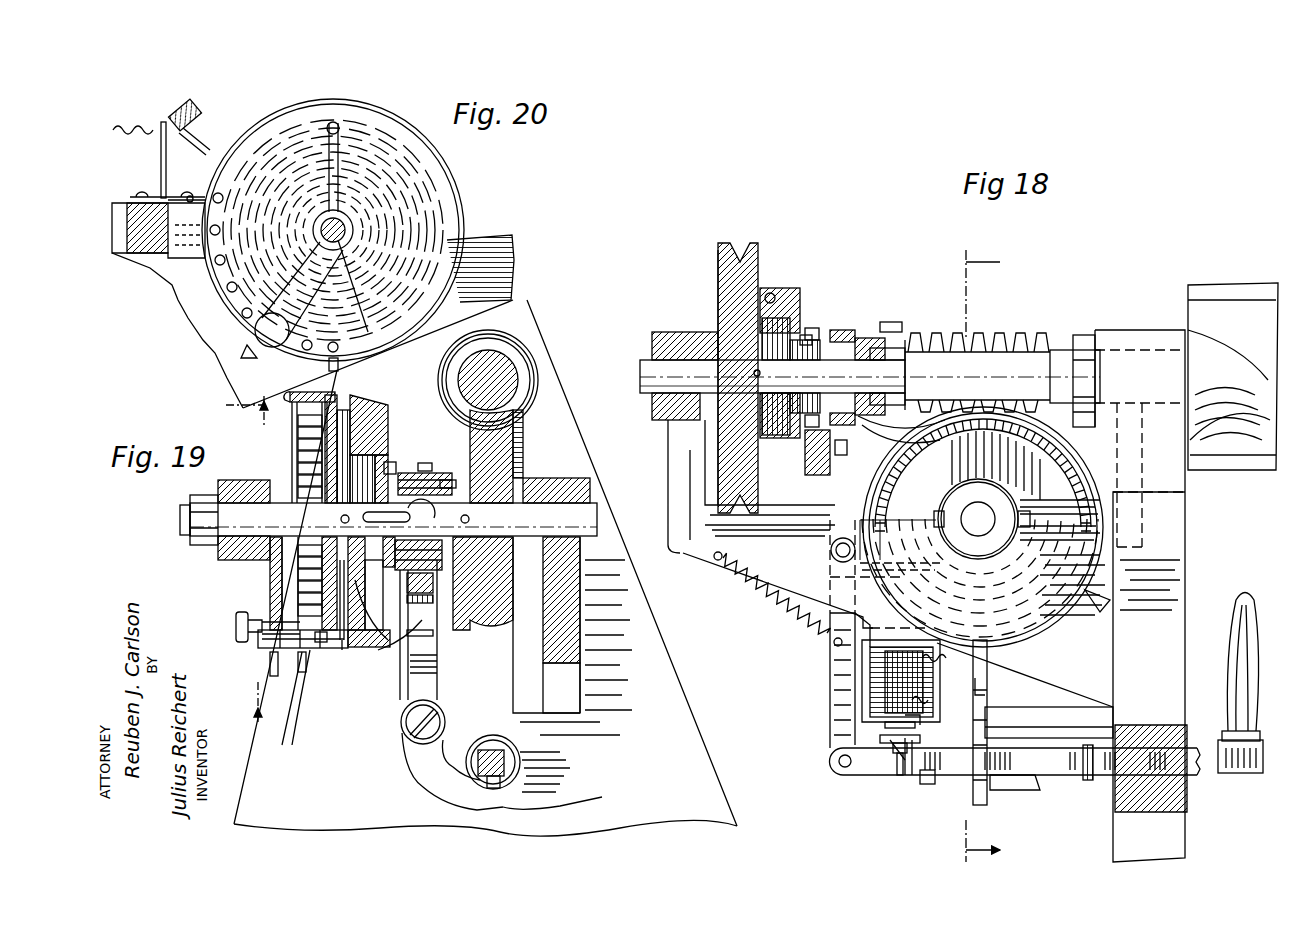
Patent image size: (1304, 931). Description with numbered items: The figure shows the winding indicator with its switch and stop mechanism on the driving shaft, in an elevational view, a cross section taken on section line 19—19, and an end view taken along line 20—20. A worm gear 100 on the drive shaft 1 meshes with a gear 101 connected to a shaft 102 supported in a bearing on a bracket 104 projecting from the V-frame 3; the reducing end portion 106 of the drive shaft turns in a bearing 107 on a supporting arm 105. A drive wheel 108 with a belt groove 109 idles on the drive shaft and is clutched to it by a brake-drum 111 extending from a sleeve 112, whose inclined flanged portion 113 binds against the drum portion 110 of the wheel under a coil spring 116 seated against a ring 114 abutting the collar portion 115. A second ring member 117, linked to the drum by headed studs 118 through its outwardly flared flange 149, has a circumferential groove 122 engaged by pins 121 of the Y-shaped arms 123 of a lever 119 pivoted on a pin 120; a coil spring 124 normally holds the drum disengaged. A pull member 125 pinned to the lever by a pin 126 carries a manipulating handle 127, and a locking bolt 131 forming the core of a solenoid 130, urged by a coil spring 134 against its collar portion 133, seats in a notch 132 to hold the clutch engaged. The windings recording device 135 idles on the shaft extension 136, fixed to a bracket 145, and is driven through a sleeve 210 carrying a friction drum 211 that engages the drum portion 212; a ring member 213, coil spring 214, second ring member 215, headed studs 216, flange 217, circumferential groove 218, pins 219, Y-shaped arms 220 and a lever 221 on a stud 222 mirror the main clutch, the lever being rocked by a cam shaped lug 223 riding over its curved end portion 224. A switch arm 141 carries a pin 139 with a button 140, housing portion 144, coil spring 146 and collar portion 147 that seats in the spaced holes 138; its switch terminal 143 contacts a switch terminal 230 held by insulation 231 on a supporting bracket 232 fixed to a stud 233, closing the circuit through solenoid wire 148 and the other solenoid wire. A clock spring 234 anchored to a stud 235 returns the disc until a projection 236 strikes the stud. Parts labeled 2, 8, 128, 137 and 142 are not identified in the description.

In FIG. 19, the drive shaft 1 is at (503, 355).
In FIG. 18, the drive shaft 1 is at (1047, 348).
In FIG. 19, the bearing collar 2 is at (497, 334).
In FIG. 18, the bearing collar 2 is at (1085, 333).
In FIG. 19, the V-frame 3 is at (643, 824).
In FIG. 18, the V-frame 3 is at (1188, 576).
In FIG. 18, the main shaft 8 is at (1210, 292).
In FIG. 18, the section line 19— 19 is at (1000, 552).
In FIG. 19, the line 20— 20 is at (239, 565).
In FIG. 19, the worm gear 100 is at (513, 360).
In FIG. 18, the worm gear 100 is at (988, 342).
In FIG. 19, the gear 101 is at (503, 438).
In FIG. 18, the gear 101 is at (905, 470).
In FIG. 19, the shaft 102 is at (590, 512).
In FIG. 18, the shaft 102 is at (988, 527).
In FIG. 20, the bracket 104 is at (506, 258).
In FIG. 19, the bracket 104 is at (567, 628).
In FIG. 18, the bracket 104 is at (692, 540).
In FIG. 18, the supporting arm 105 is at (668, 484).
In FIG. 18, the reducing end portion 106 is at (648, 378).
In FIG. 18, the bearing 107 is at (655, 340).
In FIG. 18, the drive wheel 108 is at (718, 277).
In FIG. 18, the groove 109 is at (740, 246).
In FIG. 18, the drum portion 110 is at (772, 290).
In FIG. 18, the brake-drum 111 is at (792, 312).
In FIG. 18, the sleeve 112 is at (817, 342).
In FIG. 18, the flanged portion 113 is at (777, 300).
In FIG. 18, the ring 114 is at (868, 345).
In FIG. 18, the collar portion 115 is at (896, 358).
In FIG. 18, the coil spring 116 is at (823, 335).
In FIG. 18, the second ring member 117 is at (853, 335).
In FIG. 18, the headed studs 118 is at (808, 447).
In FIG. 18, the lever 119 is at (835, 697).
In FIG. 18, the pin 120 is at (832, 538).
In FIG. 18, the pins 121 is at (893, 325).
In FIG. 18, the circumferential groove 122 is at (882, 444).
In FIG. 18, the Y-shaped arms 123 is at (875, 426).
In FIG. 18, the coil spring 124 is at (767, 612).
In FIG. 19, the pull member 125 is at (512, 753).
In FIG. 18, the pull member 125 is at (928, 782).
In FIG. 18, the pin 126 is at (832, 766).
In FIG. 18, the manipulating handle 127 is at (1241, 605).
In FIG. 18, the bracket 128 is at (1090, 780).
In FIG. 18, the solenoid 130 is at (870, 667).
In FIG. 18, the locking bolt 131 is at (912, 772).
In FIG. 18, the notch 132 is at (905, 752).
In FIG. 18, the collar portion 133 is at (895, 748).
In FIG. 18, the coil spring 134 is at (880, 738).
In FIG. 19, the windings recording device 135 is at (359, 670).
In FIG. 20, the shaft extension 136 is at (353, 247).
In FIG. 19, the shaft extension 136 is at (283, 473).
In FIG. 19, the wire 137 is at (296, 670).
In FIG. 20, the spaced holes 138 is at (224, 292).
In FIG. 19, the spaced holes 138 is at (322, 648).
In FIG. 19, the pin 139 is at (270, 650).
In FIG. 20, the button 140 is at (154, 248).
In FIG. 19, the button 140 is at (236, 630).
In FIG. 20, the switch arm 141 is at (369, 296).
In FIG. 19, the switch arm 141 is at (275, 590).
In FIG. 19, the housing wall 142 is at (276, 562).
In FIG. 20, the switch terminal 143 is at (250, 358).
In FIG. 19, the switch terminal 143 is at (272, 676).
In FIG. 18, the switch terminal 143 is at (1107, 679).
In FIG. 19, the housing portion 144 is at (272, 628).
In FIG. 19, the bracket 145 is at (287, 487).
In FIG. 19, the coil spring 146 is at (300, 673).
In FIG. 19, the collar portion 147 is at (281, 715).
In FIG. 18, the solenoid wire 148 is at (930, 656).
In FIG. 18, the outwardly flared flange 149 is at (808, 338).
In FIG. 19, the sleeve 210 is at (410, 470).
In FIG. 19, the friction drum 211 is at (390, 408).
In FIG. 19, the drum portion 212 is at (355, 398).
In FIG. 19, the ring member 213 is at (448, 482).
In FIG. 19, the coil spring 214 is at (424, 464).
In FIG. 19, the second ring member 215 is at (398, 462).
In FIG. 19, the headed studs 216 is at (430, 655).
In FIG. 19, the flange 217 is at (433, 634).
In FIG. 19, the circumferential groove 218 is at (425, 618).
In FIG. 19, the pins 219 is at (433, 583).
In FIG. 19, the Y-shaped arms 220 is at (433, 600).
In FIG. 18, the Y-shaped arms 220 is at (860, 565).
In FIG. 19, the lever 221 is at (437, 678).
In FIG. 18, the lever 221 is at (985, 691).
In FIG. 19, the stud 222 is at (445, 713).
In FIG. 18, the stud 222 is at (1062, 742).
In FIG. 19, the cam shaped lug 223 is at (527, 782).
In FIG. 18, the cam shaped lug 223 is at (1006, 792).
In FIG. 19, the curved end portion 224 is at (572, 796).
In FIG. 18, the curved end portion 224 is at (973, 806).
In FIG. 20, the switch terminal 230 is at (207, 136).
In FIG. 20, the insulation 231 is at (196, 111).
In FIG. 20, the supporting bracket 232 is at (161, 170).
In FIG. 20, the stud 233 is at (138, 256).
In FIG. 20, the clock spring 234 is at (412, 196).
In FIG. 19, the clock spring 234 is at (293, 442).
In FIG. 20, the stud 235 is at (343, 126).
In FIG. 20, the projection 236 is at (187, 197).